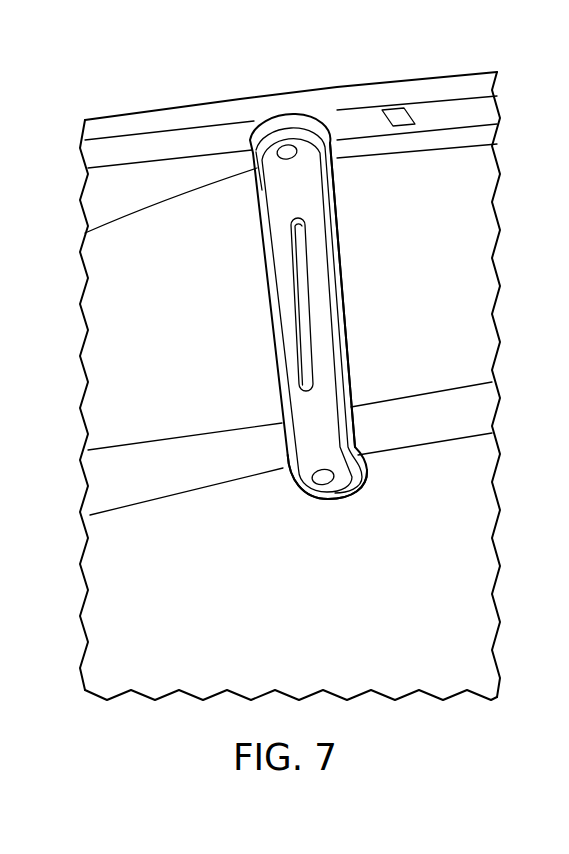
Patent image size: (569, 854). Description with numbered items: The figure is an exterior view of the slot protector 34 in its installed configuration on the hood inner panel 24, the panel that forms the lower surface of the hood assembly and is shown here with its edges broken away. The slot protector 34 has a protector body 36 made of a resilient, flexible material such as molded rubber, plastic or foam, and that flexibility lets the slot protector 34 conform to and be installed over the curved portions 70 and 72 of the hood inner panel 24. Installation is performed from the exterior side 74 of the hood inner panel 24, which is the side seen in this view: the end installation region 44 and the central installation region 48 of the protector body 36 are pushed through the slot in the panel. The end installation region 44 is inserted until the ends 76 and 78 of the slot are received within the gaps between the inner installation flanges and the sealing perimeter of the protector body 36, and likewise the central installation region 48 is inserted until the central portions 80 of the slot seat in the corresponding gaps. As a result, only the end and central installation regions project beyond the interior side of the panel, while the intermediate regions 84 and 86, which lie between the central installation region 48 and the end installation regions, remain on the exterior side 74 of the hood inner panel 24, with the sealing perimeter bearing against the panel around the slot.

The hood inner panel 24 is at (475, 268).
The slot protector 34 is at (305, 304).
The protector body 36 is at (313, 407).
The end installation region 44 is at (326, 122).
The central installation region 48 is at (270, 283).
The curved portion 70 is at (213, 140).
The curved portion 72 is at (130, 520).
The exterior side 74 is at (137, 272).
The end of slot 76 is at (272, 114).
The end of slot 78 is at (336, 499).
The central portion of slot 80 is at (343, 302).
The intermediate region 84 is at (250, 182).
The intermediate region 86 is at (358, 436).